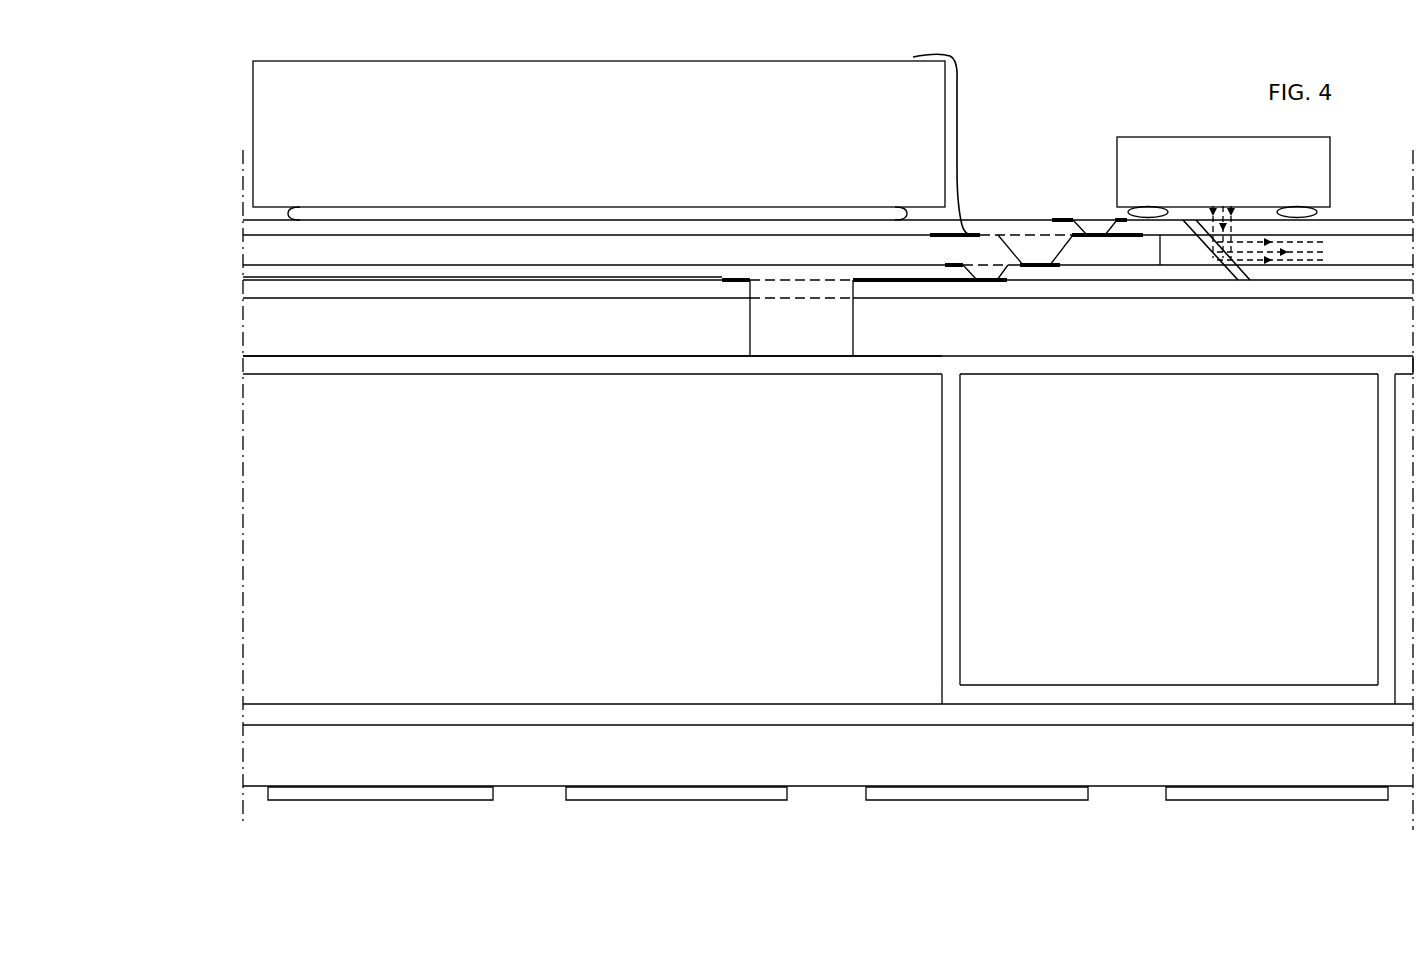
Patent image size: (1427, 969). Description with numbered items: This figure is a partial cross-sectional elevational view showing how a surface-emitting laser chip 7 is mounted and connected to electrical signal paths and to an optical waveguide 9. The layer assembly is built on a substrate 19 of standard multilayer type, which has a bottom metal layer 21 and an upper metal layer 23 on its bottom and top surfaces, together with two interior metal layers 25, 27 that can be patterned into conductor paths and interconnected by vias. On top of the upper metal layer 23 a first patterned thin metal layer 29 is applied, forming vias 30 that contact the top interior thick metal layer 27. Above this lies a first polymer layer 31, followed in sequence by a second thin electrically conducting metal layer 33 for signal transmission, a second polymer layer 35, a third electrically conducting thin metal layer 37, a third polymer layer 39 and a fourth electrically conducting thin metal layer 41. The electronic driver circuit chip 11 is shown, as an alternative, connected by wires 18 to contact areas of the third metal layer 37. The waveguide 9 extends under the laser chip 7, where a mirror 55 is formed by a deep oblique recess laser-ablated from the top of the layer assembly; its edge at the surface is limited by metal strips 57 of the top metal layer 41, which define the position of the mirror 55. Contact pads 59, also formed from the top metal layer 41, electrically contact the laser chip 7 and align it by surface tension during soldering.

The surface-emitting laser chip 7 is at (1207, 145).
The optical waveguide 9 is at (1359, 203).
The electronic driver circuit chip 11 is at (254, 131).
The wires 18 is at (960, 122).
The substrate 19 is at (247, 282).
The bottom metal layer 21 is at (248, 802).
The upper metal layer 23 is at (245, 298).
The interior metal layer 25 is at (246, 716).
The top interior thick metal layer 27 is at (244, 366).
The first patterned thin metal layer 29 is at (242, 283).
The vias 30 is at (845, 313).
The first polymer layer 31 is at (247, 277).
The second thin electrically conducting metal layer 33 is at (242, 266).
The second polymer layer 35 is at (246, 248).
The third electrically conducting thin metal layer 37 is at (242, 236).
The third polymer layer 39 is at (244, 223).
The fourth electrically conducting thin metal layer 41 is at (241, 218).
The mirror 55 is at (1212, 258).
The metal strips 57 is at (1197, 220).
The contact pads 59 is at (1124, 218).